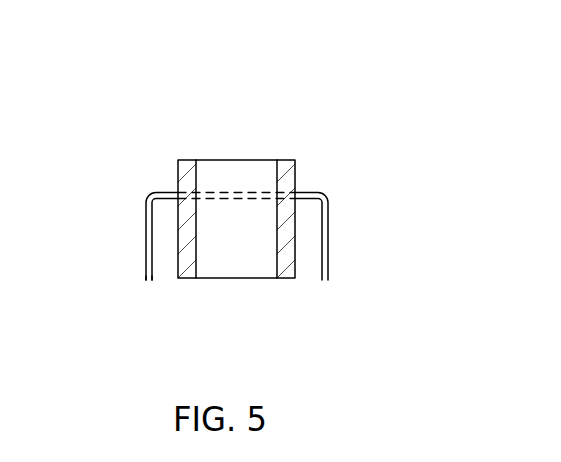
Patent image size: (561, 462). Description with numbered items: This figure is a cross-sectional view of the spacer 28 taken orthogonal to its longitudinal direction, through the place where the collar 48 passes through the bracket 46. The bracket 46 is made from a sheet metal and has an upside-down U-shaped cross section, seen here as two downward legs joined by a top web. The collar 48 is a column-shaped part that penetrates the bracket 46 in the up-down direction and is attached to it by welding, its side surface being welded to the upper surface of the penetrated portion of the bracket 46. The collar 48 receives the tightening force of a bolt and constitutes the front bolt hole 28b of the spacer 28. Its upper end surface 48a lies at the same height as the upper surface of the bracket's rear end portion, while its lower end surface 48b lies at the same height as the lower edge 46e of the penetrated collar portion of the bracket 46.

The spacer 28 is at (273, 82).
The front bolt hole 28b is at (197, 182).
The bracket 46 is at (146, 234).
The lower edge of the penetrated collar portion 46e is at (148, 282).
The collar 48 is at (178, 172).
The upper end surface 48a is at (285, 160).
The lower end surface 48b is at (185, 279).